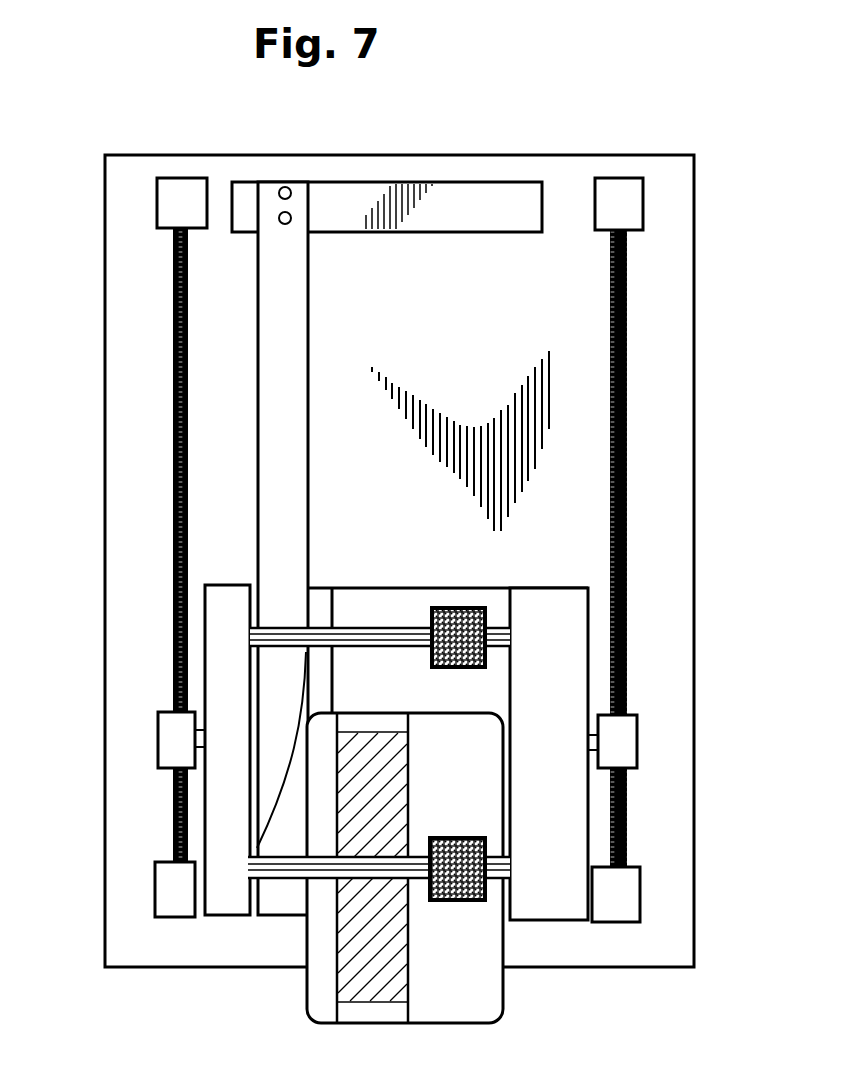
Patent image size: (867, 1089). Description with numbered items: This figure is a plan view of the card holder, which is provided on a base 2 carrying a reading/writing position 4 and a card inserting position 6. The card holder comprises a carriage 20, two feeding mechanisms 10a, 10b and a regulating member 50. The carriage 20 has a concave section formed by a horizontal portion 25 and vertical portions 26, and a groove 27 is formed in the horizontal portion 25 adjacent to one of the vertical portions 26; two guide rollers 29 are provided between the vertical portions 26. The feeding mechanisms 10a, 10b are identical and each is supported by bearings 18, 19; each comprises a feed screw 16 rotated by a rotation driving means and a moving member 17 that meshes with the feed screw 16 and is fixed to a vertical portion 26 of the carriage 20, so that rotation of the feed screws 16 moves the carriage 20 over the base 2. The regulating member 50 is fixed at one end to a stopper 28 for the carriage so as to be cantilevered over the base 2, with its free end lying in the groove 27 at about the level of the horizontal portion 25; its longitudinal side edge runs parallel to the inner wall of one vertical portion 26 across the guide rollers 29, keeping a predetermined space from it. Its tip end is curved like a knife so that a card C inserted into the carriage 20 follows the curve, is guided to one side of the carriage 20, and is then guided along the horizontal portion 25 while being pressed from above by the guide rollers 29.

The base 2 is at (696, 400).
The reading/writing position 4 is at (516, 292).
The card inserting position 6 is at (566, 584).
The feeding mechanism 10a is at (170, 380).
The feeding mechanism 10b is at (630, 382).
The feed screw 16 is at (172, 446).
The moving member 17 is at (166, 742).
The bearing 18 is at (165, 890).
The bearing 19 is at (162, 198).
The carriage 20 is at (562, 922).
The horizontal portion 25 is at (482, 690).
The vertical portion 26 is at (572, 806).
The groove 27 is at (282, 890).
The stopper 28 is at (475, 192).
The guide roller 29 is at (460, 608).
The regulating member 50 is at (302, 262).
The card C is at (463, 1005).